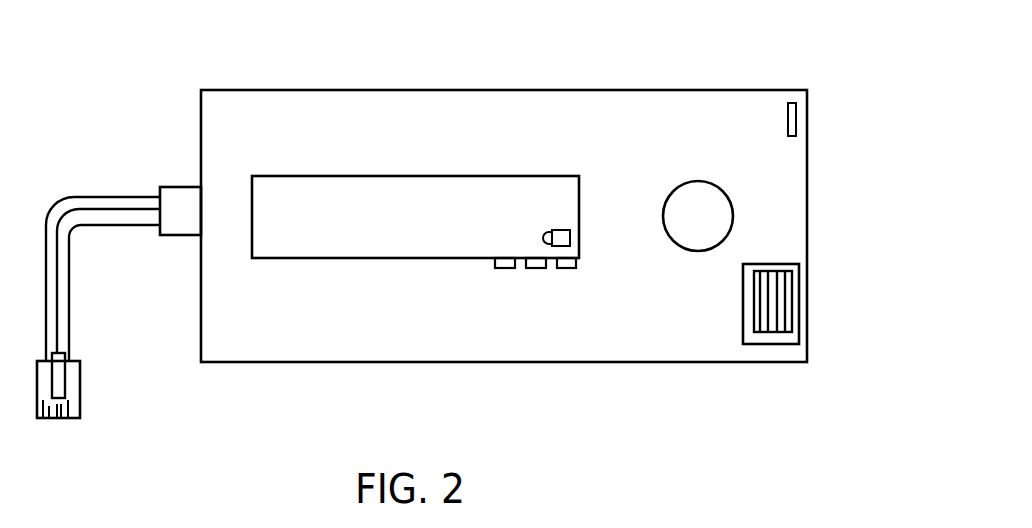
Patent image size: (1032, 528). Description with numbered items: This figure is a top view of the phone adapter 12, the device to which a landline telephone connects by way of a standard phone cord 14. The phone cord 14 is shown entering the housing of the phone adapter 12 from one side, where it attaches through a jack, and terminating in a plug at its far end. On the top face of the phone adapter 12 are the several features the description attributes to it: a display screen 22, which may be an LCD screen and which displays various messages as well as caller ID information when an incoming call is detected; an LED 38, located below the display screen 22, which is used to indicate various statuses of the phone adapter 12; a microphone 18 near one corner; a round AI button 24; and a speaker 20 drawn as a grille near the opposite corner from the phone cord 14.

The phone adapter 12 is at (271, 90).
The phone cord 14 is at (85, 196).
The microphone 18 is at (788, 120).
The speaker 20 is at (793, 305).
The display screen 22 is at (321, 258).
The AI button 24 is at (733, 213).
The LED 38 is at (508, 268).